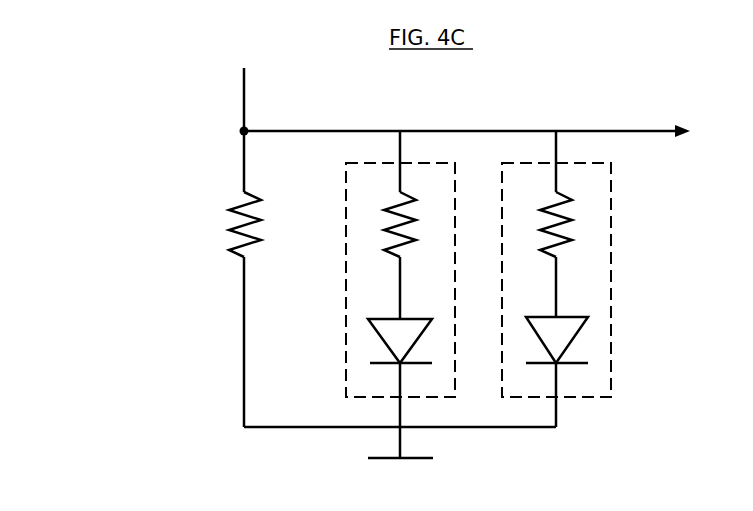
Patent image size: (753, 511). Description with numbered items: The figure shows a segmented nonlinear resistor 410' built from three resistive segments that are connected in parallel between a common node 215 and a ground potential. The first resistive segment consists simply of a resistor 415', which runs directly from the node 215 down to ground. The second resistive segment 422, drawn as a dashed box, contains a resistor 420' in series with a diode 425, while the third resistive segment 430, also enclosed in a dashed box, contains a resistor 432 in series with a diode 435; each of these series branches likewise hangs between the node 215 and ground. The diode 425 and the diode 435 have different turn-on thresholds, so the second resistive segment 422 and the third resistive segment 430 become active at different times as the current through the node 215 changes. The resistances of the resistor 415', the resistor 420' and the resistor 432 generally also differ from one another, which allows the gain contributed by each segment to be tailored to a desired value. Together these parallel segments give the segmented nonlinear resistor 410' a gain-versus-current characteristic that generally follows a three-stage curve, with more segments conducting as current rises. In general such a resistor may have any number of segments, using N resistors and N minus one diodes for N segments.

The segmented nonlinear resistor 410' is at (385, 241).
The node 215 is at (308, 128).
The second resistive segment 422 is at (430, 160).
The third resistive segment 430 is at (585, 162).
The resistor 415' is at (207, 224).
The resistor 420' is at (355, 224).
The diode 425 is at (368, 343).
The resistor 432 is at (572, 217).
The diode 435 is at (576, 343).